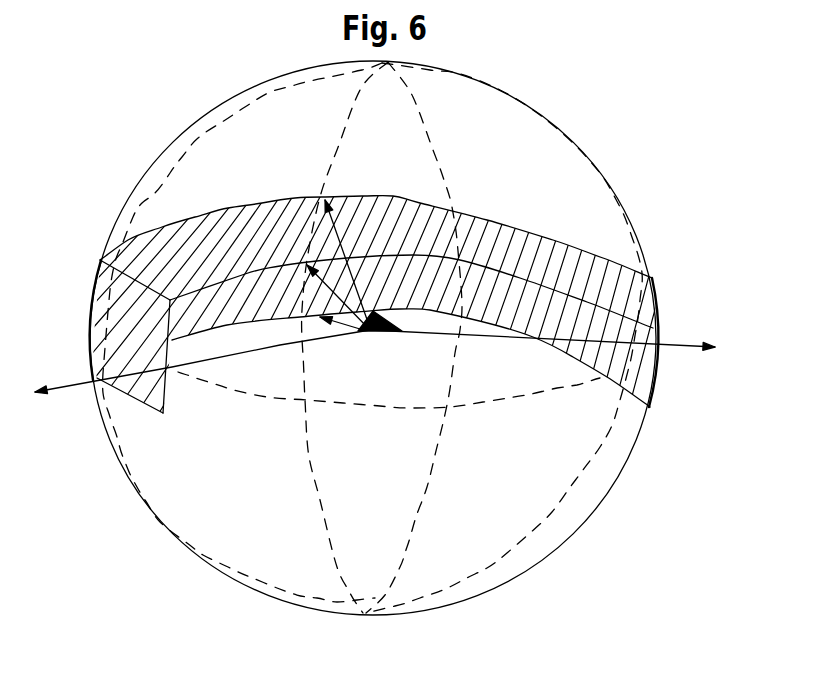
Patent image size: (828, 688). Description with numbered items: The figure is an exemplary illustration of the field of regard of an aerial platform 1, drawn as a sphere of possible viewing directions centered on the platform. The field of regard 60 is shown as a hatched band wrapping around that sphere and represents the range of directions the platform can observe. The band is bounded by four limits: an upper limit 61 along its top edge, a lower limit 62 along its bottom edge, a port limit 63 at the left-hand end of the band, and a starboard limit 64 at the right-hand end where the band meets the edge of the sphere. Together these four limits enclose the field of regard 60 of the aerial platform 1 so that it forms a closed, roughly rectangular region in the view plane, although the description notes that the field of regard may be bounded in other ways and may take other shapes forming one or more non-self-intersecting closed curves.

The aerial platform 1 is at (380, 332).
The field of regard 60 is at (350, 285).
The upper limit 61 is at (590, 253).
The lower limit 62 is at (143, 412).
The port limit 63 is at (166, 389).
The starboard limit 64 is at (656, 371).